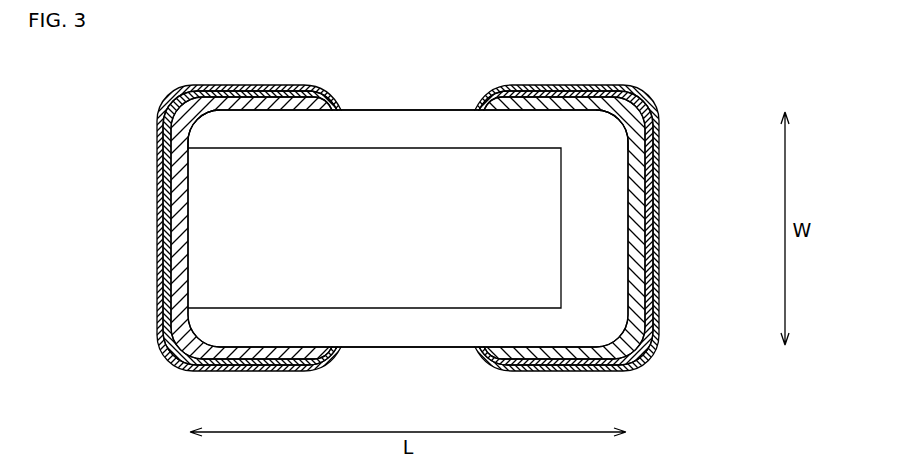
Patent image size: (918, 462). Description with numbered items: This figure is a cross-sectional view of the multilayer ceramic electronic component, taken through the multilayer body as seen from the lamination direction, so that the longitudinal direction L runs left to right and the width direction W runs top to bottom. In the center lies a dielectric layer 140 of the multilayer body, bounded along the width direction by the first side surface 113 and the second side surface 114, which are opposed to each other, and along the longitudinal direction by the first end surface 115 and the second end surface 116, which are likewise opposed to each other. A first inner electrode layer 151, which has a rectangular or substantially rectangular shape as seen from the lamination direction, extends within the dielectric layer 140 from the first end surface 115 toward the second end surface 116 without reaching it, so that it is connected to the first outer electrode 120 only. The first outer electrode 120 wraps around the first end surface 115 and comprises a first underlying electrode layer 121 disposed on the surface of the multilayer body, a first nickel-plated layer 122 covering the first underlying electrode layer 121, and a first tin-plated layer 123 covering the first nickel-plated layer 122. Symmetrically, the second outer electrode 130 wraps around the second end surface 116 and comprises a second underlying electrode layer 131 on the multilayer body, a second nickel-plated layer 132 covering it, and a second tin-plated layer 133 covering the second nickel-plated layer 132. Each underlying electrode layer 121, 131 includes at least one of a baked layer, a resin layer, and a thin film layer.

The first side surface 113 is at (411, 360).
The second side surface 114 is at (456, 100).
The first end surface 115 is at (178, 138).
The second end surface 116 is at (640, 138).
The first outer electrode 120 is at (193, 228).
The first underlying electrode layer 121 is at (180, 185).
The first nickel-plated layer 122 is at (164, 232).
The first tin-plated layer 123 is at (93, 172).
The second outer electrode 130 is at (624, 228).
The second underlying electrode layer 131 is at (637, 185).
The second nickel-plated layer 132 is at (652, 228).
The second tin-plated layer 133 is at (722, 172).
The dielectric layer 140 is at (363, 128).
The first inner electrode layer 151 is at (407, 185).